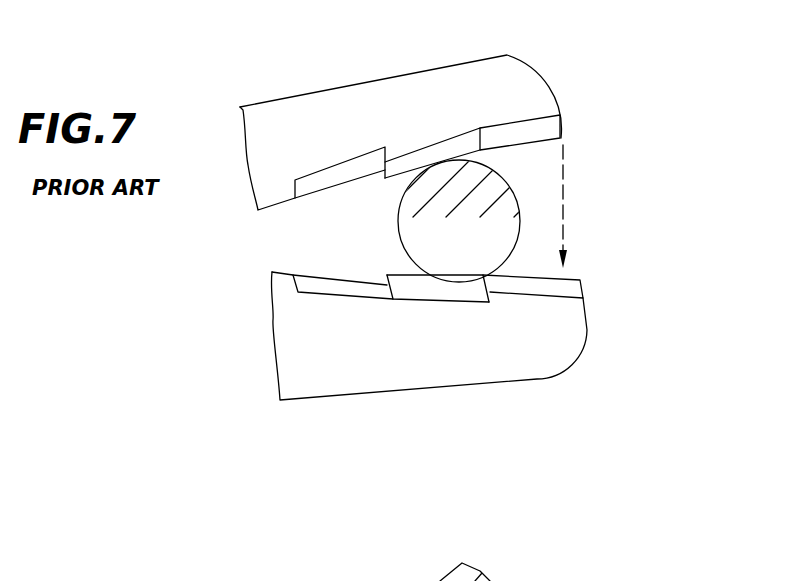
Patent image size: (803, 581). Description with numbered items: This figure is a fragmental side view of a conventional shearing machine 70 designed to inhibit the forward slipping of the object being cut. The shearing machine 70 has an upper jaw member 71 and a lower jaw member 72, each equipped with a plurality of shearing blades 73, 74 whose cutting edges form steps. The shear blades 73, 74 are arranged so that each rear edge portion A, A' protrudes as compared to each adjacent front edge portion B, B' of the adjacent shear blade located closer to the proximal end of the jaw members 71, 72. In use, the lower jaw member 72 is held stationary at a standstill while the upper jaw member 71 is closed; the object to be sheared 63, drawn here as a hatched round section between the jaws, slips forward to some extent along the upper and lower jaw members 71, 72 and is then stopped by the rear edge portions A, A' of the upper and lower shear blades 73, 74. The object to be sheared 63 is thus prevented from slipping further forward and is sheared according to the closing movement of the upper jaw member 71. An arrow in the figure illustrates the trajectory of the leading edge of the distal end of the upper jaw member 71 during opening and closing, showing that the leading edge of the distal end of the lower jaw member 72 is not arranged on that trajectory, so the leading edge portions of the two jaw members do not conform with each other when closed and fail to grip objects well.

The object to be sheared 63 is at (402, 238).
The shearing machine 70 is at (556, 48).
The upper jaw member 71 is at (285, 117).
The lower jaw member 72 is at (555, 345).
The shearing blade 73 is at (557, 128).
The shearing blade 74 is at (572, 292).
The rear edge portion A is at (515, 352).
The front edge portion B is at (455, 355).
The rear edge portion A' is at (503, 90).
The front edge portion B' is at (436, 94).